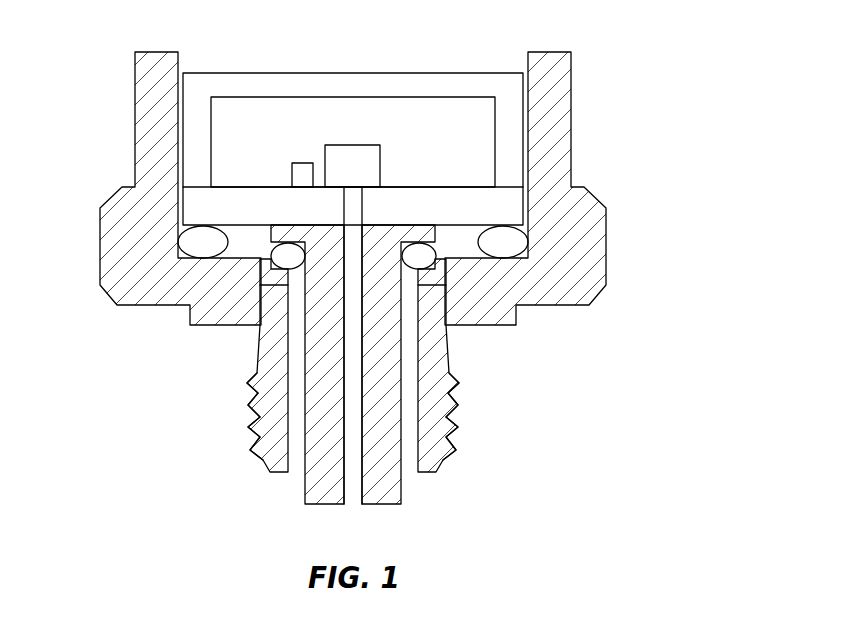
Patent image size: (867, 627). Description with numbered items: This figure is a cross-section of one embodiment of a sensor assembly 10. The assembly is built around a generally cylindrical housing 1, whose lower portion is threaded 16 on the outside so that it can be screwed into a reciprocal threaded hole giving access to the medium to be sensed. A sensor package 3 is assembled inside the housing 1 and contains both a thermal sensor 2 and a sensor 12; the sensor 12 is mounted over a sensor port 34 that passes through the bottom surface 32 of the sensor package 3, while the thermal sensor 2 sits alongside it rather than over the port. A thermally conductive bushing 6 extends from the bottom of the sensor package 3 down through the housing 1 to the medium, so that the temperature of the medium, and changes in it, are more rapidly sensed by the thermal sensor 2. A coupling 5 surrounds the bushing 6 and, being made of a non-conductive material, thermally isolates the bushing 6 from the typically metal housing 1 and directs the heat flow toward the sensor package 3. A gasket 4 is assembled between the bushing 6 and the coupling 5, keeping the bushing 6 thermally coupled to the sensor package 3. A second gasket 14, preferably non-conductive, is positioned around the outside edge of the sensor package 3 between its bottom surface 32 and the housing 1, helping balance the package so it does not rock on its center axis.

The housing 1 is at (135, 85).
The thermal sensor 2 is at (292, 172).
The sensor package 3 is at (207, 206).
The gasket 4 is at (287, 255).
The coupling 5 is at (416, 367).
The bushing 6 is at (383, 412).
The sensor assembly 10 is at (645, 102).
The sensor 12 is at (363, 163).
The second gasket 14 is at (510, 242).
The thread 16 is at (255, 428).
The bottom surface 32 is at (458, 236).
The sensor port 34 is at (357, 210).